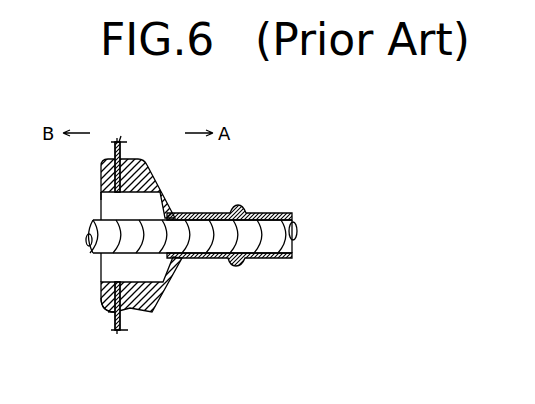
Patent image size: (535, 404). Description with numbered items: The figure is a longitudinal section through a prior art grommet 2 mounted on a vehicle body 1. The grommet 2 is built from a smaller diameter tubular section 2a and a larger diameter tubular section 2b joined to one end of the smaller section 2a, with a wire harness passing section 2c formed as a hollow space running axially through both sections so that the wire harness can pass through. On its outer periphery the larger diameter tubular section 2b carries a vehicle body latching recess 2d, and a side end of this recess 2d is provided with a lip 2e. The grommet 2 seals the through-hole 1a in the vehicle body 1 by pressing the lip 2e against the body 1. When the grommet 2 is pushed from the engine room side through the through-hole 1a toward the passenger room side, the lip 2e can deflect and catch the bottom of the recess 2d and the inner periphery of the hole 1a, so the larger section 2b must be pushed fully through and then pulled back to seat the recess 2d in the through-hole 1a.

The vehicle body 1 is at (122, 146).
The through-hole 1a is at (102, 198).
The grommet 2 is at (175, 193).
The smaller diameter tubular section 2a is at (213, 259).
The larger diameter tubular section 2b is at (153, 298).
The wire harness passing section 2c is at (115, 262).
The vehicle body latching recess 2d is at (102, 295).
The lip 2e is at (110, 318).